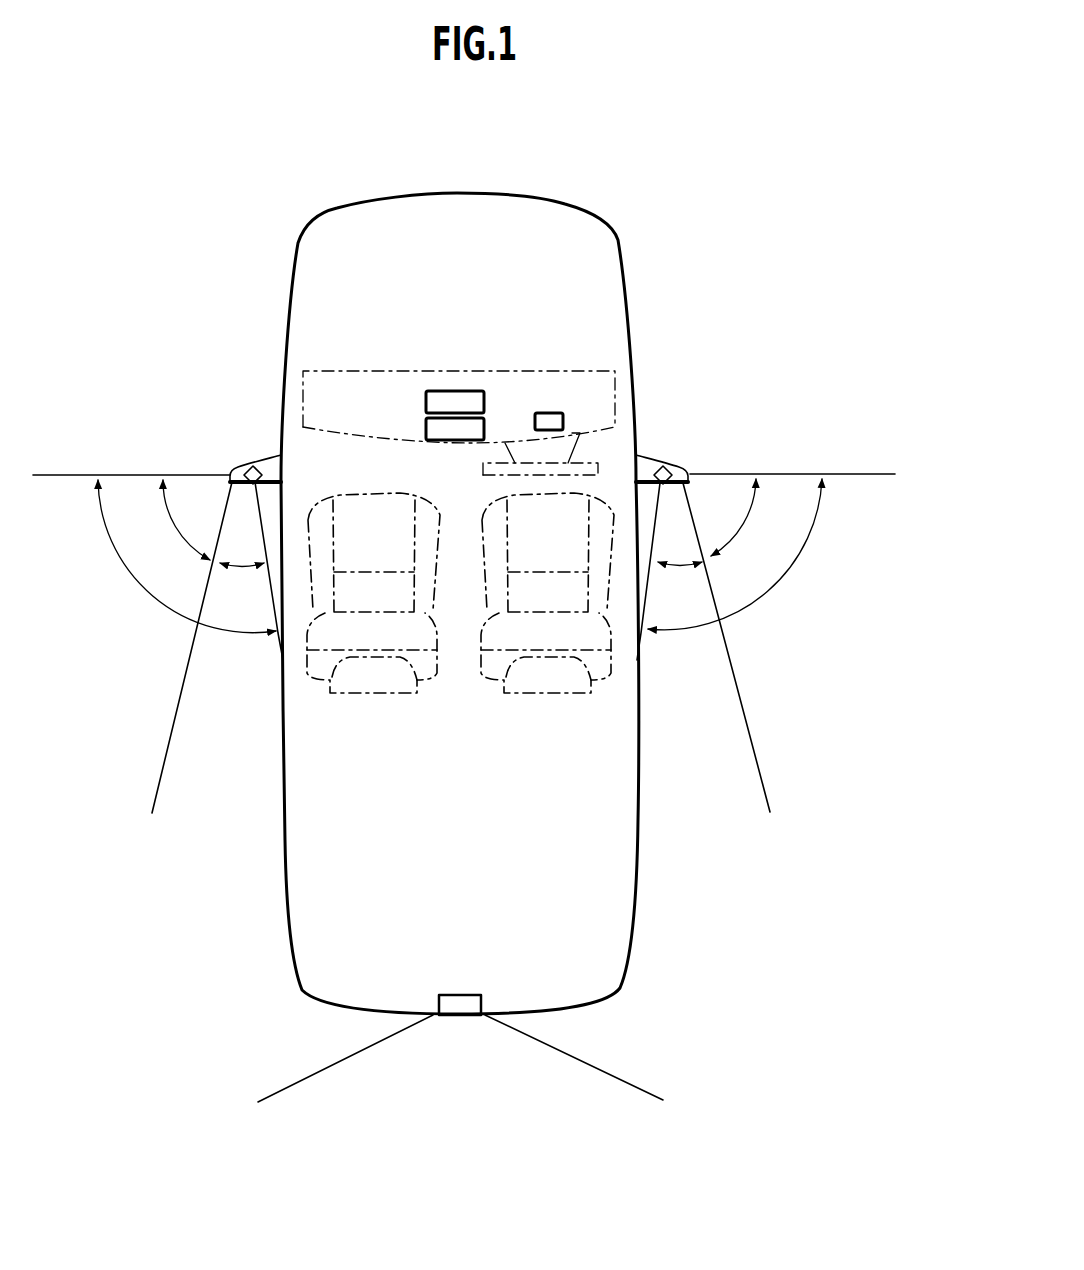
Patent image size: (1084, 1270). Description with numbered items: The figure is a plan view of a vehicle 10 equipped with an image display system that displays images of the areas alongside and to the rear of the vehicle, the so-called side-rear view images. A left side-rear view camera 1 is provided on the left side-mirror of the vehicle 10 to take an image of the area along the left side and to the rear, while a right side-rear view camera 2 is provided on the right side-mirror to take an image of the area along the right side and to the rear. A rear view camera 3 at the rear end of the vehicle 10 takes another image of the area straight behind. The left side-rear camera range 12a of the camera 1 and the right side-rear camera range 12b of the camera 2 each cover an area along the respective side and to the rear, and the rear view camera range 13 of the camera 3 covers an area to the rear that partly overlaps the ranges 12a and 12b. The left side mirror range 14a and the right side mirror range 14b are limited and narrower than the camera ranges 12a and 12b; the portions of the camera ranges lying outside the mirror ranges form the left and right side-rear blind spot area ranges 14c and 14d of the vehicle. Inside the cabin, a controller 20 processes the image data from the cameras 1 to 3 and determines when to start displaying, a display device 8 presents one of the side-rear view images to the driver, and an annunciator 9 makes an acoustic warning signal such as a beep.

The vehicle 10 is at (457, 193).
The left side-rear view camera 1 is at (255, 463).
The right side-rear view camera 2 is at (670, 462).
The rear view camera 3 is at (467, 995).
The controller 20 is at (426, 402).
The display device 8 is at (426, 429).
The annunciator 9 is at (547, 413).
The left side-rear camera range 12a is at (184, 556).
The right side-rear camera range 12b is at (735, 555).
The left side mirror range 14a is at (241, 585).
The right side mirror range 14b is at (680, 584).
The left side-rear blind spot area range 14c is at (170, 520).
The right side-rear blind spot area range 14d is at (749, 520).
The rear view camera range 13 is at (612, 1075).